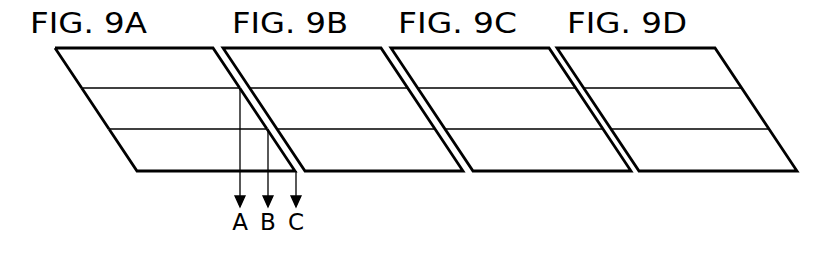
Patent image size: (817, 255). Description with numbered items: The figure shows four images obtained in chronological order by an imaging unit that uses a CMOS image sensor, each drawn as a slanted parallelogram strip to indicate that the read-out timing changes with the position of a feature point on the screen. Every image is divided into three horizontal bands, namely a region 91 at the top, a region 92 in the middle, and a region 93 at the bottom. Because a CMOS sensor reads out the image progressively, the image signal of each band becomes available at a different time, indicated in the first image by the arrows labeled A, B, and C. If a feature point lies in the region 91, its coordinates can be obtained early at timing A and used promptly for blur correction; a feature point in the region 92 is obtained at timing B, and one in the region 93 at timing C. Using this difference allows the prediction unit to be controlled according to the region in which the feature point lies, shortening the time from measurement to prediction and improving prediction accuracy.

The region 91 is at (82, 70).
The region 92 is at (108, 110).
The region 93 is at (138, 148).